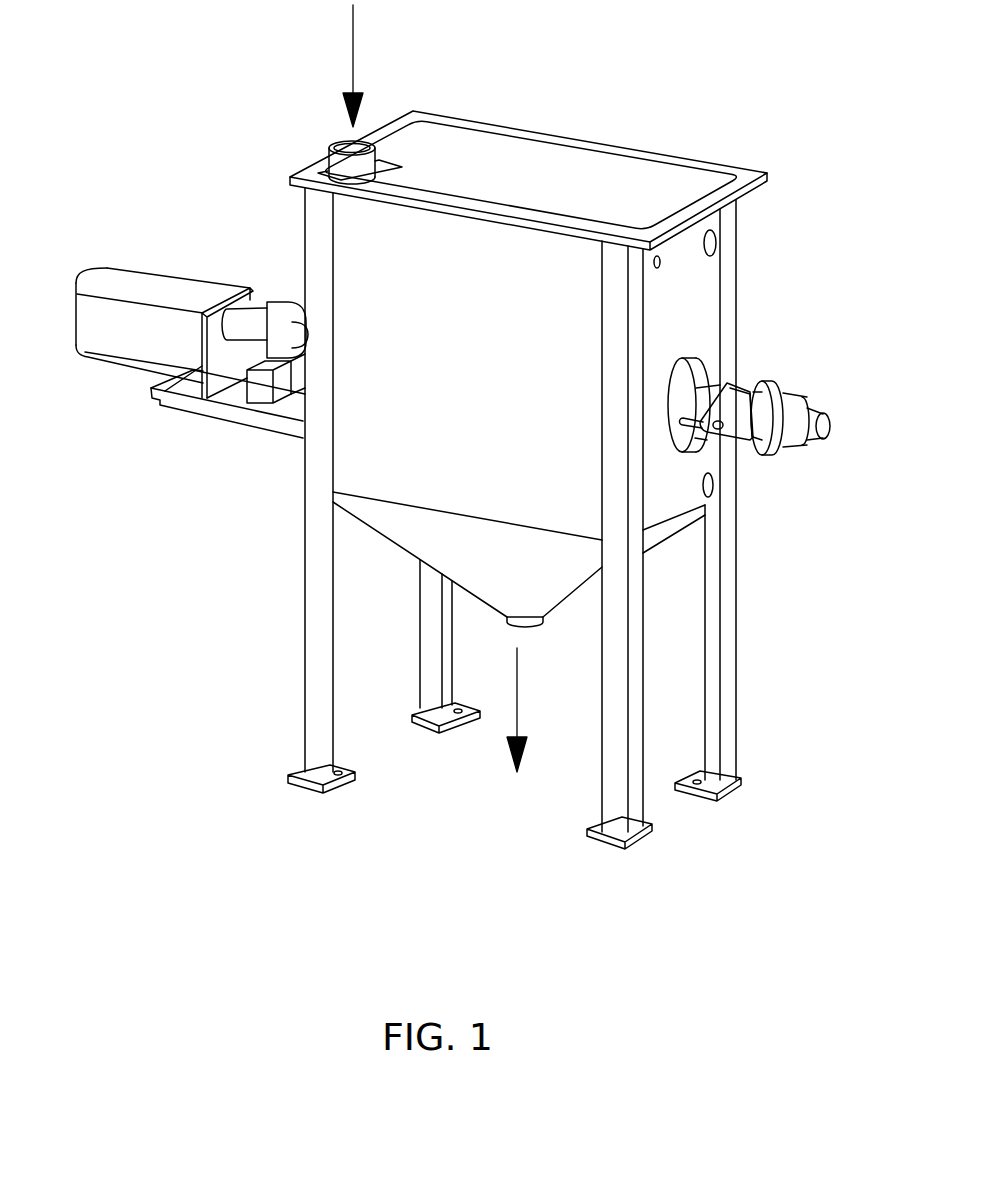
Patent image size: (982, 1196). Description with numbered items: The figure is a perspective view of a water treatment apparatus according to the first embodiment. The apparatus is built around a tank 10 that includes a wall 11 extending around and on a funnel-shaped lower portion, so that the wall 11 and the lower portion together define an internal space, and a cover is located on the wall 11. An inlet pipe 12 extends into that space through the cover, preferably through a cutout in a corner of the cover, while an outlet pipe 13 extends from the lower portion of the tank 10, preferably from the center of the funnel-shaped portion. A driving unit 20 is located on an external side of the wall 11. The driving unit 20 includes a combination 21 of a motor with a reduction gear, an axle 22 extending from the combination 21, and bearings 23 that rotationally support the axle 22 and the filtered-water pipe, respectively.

The tank 10 is at (735, 297).
The wall 11 is at (370, 463).
The inlet pipe 12 is at (343, 148).
The outlet pipe 13 is at (537, 628).
The driving unit 20 is at (190, 295).
The combination of a motor with a reduction gear 21 is at (112, 333).
The axle 22 is at (240, 322).
The bearings 23 is at (280, 312).